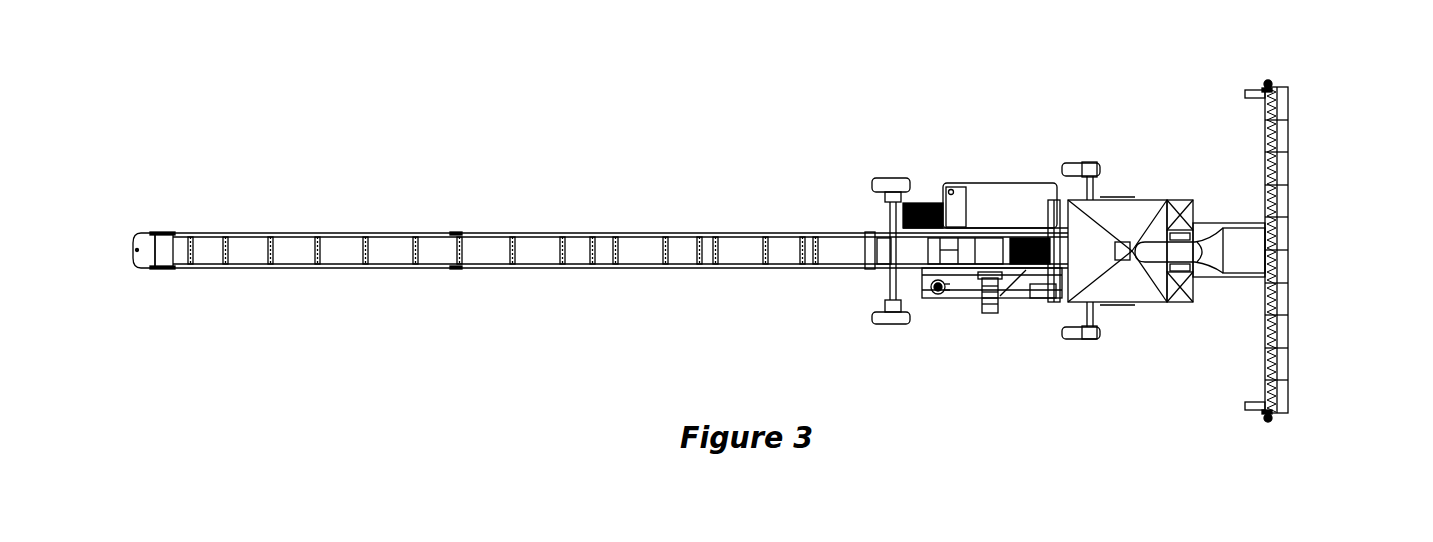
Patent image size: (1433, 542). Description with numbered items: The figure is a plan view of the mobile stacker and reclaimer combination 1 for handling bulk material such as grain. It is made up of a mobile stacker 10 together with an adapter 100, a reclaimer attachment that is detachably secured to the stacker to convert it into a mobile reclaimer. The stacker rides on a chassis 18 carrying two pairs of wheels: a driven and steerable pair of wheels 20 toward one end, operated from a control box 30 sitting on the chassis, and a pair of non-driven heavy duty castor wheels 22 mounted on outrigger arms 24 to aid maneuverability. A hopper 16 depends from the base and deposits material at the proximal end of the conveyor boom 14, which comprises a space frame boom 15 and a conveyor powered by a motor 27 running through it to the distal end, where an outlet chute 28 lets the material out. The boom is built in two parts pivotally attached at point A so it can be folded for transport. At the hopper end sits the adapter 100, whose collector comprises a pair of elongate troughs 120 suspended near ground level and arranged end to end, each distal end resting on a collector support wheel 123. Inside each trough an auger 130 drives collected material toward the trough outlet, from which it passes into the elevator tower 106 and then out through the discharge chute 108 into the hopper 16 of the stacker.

The mobile stacker and reclaimer combination 1 is at (697, 141).
The mobile stacker 10 is at (868, 289).
The conveyor boom 14 is at (515, 231).
The boom 15 is at (567, 233).
The hopper 16 is at (1140, 205).
The chassis 18 is at (942, 305).
The driven and steerable pair of wheels 20 is at (883, 181).
The castor wheels 22 is at (1072, 168).
The outrigger arms 24 is at (1093, 310).
The motor 27 is at (990, 315).
The outlet chute 28 is at (152, 250).
The control box 30 is at (978, 200).
The adapter 100 is at (1302, 84).
The elevator tower 106 is at (1240, 270).
The discharge chute 108 is at (1172, 243).
The elongate troughs 120 is at (1283, 137).
The collector support wheel 123 is at (1250, 91).
The auger 130 is at (1280, 203).
The pivot point A is at (455, 233).